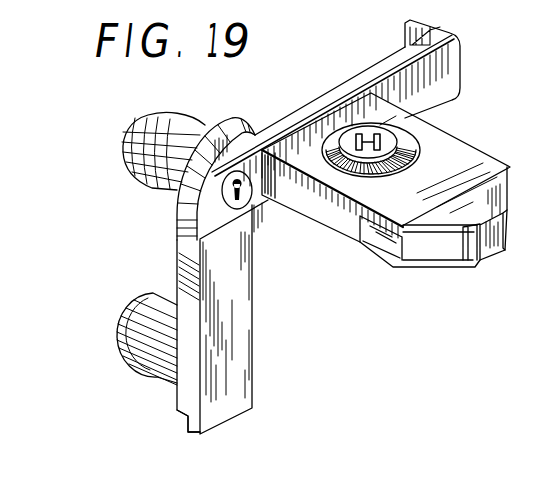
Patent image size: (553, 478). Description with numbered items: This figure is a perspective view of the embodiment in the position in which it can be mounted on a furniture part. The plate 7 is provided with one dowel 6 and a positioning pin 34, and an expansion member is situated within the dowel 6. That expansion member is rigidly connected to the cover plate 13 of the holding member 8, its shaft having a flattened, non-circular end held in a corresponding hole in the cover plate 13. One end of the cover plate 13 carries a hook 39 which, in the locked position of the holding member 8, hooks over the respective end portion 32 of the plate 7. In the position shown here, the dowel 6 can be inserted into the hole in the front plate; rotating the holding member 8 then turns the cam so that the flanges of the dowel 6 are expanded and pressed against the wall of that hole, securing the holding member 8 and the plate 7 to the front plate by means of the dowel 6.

The dowel 6 is at (124, 152).
The plate 7 is at (227, 303).
The holding member 8 is at (437, 183).
The cover plate 13 is at (423, 76).
The end portion 32 is at (188, 424).
The positioning pin 34 is at (135, 303).
The hook 39 is at (405, 29).